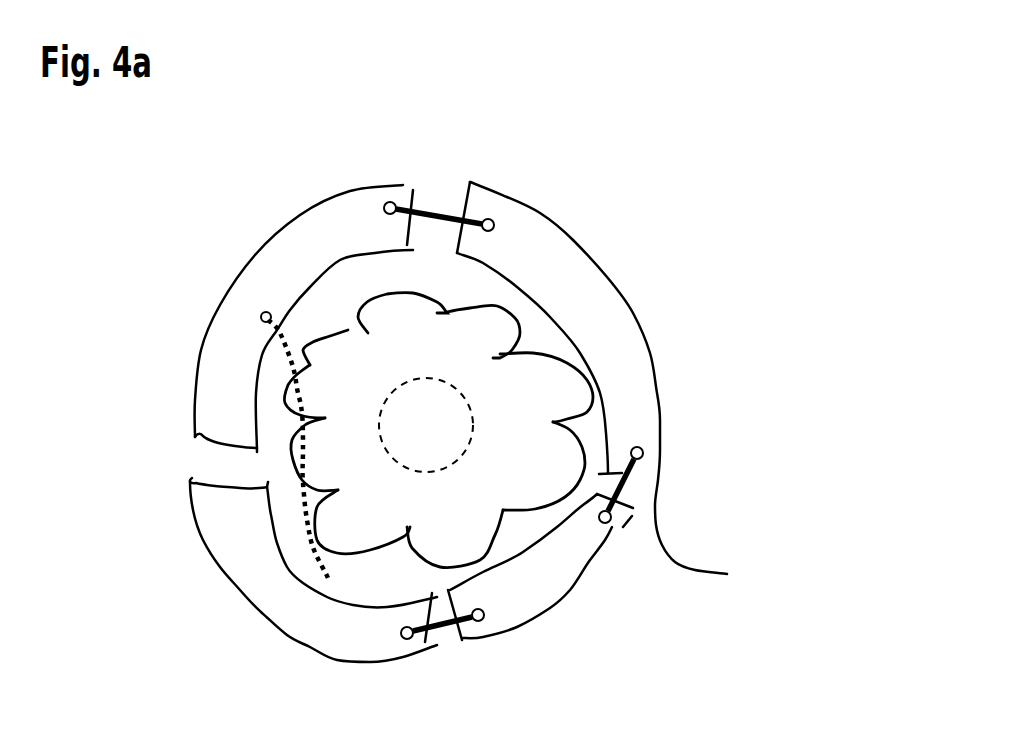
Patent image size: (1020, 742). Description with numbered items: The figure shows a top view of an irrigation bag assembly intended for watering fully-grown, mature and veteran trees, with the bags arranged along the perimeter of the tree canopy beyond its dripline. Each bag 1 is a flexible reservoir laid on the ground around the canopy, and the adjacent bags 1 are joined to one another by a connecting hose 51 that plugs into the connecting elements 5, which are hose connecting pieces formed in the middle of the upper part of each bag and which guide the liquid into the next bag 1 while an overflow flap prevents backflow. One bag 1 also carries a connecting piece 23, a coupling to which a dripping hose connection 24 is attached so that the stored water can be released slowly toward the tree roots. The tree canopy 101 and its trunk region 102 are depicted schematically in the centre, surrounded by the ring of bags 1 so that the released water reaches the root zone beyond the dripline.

The bag 1 is at (560, 562).
The connecting element 5 is at (612, 527).
The connecting hose 51 is at (627, 488).
The connecting piece 23 is at (260, 315).
The dripping hose connection 24 is at (295, 478).
The object / heart outline 101 is at (485, 347).
The central region 102 is at (437, 407).